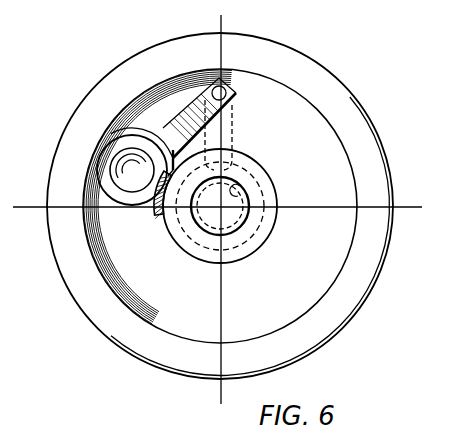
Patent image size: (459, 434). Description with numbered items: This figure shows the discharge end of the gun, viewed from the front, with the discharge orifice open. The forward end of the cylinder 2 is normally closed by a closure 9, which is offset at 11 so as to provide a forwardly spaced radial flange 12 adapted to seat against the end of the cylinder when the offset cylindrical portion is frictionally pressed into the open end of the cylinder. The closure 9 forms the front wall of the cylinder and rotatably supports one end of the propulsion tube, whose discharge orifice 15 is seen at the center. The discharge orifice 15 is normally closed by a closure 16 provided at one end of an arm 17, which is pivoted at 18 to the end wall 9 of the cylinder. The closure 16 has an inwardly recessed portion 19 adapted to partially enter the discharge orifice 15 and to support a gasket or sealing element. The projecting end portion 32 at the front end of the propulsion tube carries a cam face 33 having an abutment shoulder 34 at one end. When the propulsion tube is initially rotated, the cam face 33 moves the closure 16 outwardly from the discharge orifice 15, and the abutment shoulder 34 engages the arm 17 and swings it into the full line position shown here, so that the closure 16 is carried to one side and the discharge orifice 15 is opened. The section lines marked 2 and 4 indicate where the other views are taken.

The cylinder 2 is at (221, 15).
The section line 4- 4 is at (17, 188).
The closure 9 is at (294, 261).
The offset 11 is at (344, 258).
The radial flange 12 is at (357, 308).
The discharge orifice 15 is at (239, 190).
The closure 16 is at (162, 130).
The arm 17 is at (165, 127).
The pivot 18 is at (227, 97).
The inwardly recessed portion 19 is at (126, 171).
The projecting end portion 32 is at (182, 237).
The cam face 33 is at (163, 196).
The abutment shoulder 34 is at (142, 152).